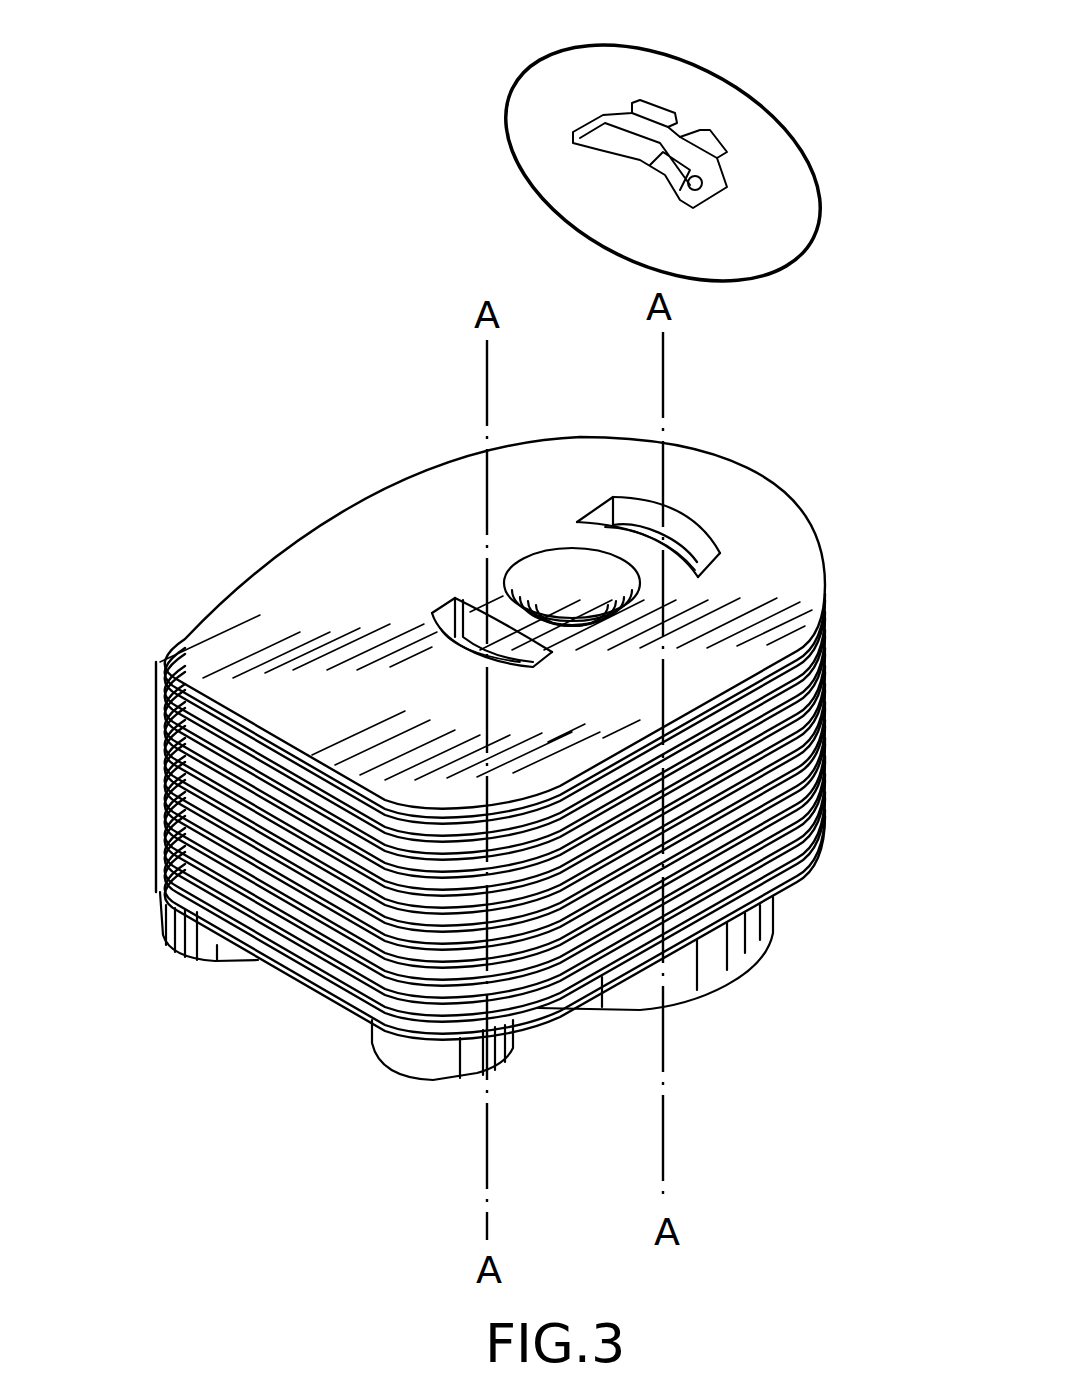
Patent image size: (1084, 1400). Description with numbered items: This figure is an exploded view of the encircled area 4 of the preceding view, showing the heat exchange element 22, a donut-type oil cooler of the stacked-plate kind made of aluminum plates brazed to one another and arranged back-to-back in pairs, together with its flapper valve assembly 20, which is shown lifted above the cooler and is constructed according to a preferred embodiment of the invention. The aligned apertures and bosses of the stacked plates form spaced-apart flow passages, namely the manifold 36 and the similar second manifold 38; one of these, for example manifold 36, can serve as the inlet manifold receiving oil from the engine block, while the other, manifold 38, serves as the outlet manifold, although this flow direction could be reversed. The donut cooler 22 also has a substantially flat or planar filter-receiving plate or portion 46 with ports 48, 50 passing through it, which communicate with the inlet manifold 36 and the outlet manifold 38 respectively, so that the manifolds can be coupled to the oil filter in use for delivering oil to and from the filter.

The disc 4 is at (760, 105).
The flapper valve assembly 20 is at (538, 113).
The heat exchange element 22 is at (333, 126).
The manifold 36 is at (675, 513).
The second manifold 38 is at (469, 608).
The filter-receiving plate 46 is at (410, 716).
The port 48 is at (722, 520).
The port 50 is at (414, 590).